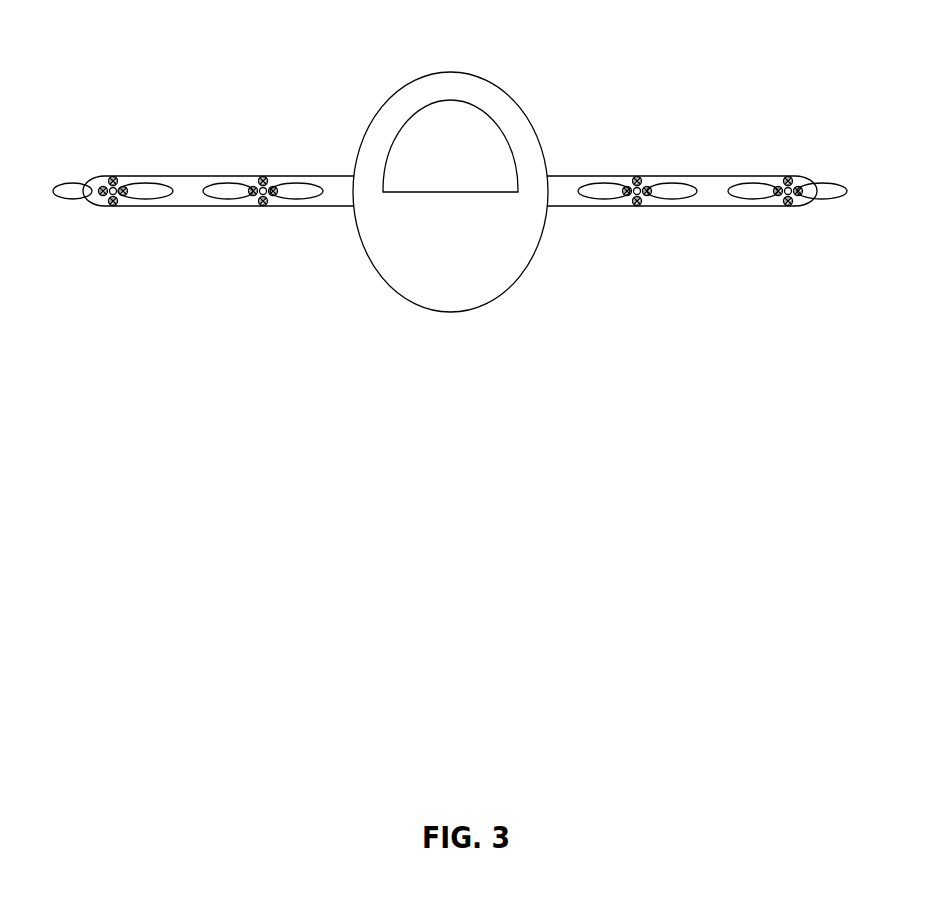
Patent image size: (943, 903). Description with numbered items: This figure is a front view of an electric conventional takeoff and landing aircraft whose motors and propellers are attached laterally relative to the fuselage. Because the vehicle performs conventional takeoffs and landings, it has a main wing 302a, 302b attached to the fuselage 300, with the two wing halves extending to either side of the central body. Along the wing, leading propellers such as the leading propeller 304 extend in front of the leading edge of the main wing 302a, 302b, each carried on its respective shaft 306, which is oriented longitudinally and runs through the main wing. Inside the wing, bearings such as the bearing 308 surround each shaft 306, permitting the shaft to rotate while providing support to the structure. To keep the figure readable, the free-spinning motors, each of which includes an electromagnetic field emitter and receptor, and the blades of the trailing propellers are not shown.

The fuselage 300 is at (452, 72).
The main wing 302a is at (308, 175).
The main wing 302b is at (712, 175).
The leading propeller 304 is at (65, 182).
The shaft 306 is at (123, 205).
The bearing 308 is at (125, 185).